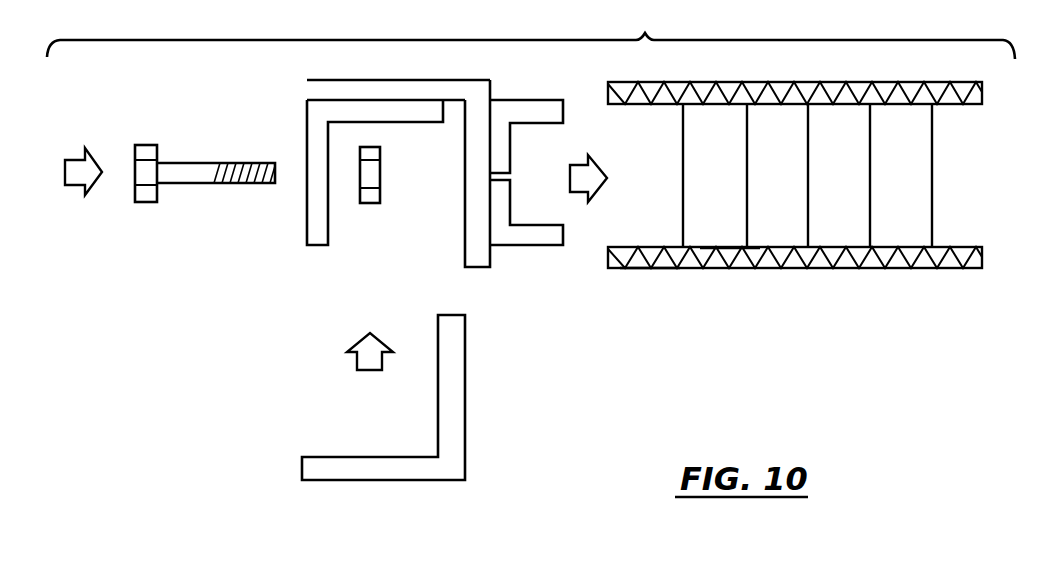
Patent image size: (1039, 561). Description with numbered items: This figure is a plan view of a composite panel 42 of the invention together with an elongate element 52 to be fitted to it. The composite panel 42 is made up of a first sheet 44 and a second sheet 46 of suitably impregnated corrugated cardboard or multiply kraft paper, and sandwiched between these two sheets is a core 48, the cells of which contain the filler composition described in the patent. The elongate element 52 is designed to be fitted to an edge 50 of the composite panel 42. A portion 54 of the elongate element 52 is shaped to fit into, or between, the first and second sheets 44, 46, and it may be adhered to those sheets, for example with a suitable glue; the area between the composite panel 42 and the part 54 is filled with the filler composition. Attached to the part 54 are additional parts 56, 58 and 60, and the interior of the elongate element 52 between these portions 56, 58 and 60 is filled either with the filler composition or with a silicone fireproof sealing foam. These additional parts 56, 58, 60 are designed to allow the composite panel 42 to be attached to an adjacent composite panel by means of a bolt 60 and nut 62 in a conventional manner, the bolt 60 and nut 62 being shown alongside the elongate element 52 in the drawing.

The composite panel 42 is at (718, 118).
The first sheet 44 is at (893, 97).
The second sheet 46 is at (798, 253).
The core 48 is at (720, 235).
The edge 50 is at (650, 233).
The elongate element 52 is at (443, 80).
The portion of the elongate element 54 is at (500, 242).
The additional part 56 is at (465, 220).
The additional part 58 is at (312, 232).
The bolt 60 is at (200, 184).
The nut 62 is at (380, 185).